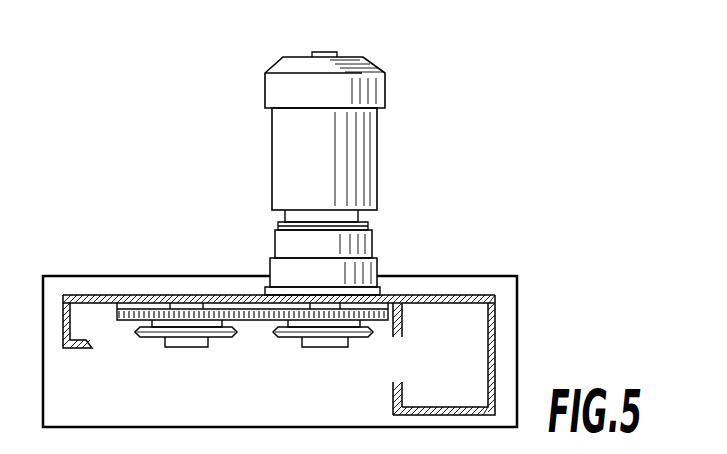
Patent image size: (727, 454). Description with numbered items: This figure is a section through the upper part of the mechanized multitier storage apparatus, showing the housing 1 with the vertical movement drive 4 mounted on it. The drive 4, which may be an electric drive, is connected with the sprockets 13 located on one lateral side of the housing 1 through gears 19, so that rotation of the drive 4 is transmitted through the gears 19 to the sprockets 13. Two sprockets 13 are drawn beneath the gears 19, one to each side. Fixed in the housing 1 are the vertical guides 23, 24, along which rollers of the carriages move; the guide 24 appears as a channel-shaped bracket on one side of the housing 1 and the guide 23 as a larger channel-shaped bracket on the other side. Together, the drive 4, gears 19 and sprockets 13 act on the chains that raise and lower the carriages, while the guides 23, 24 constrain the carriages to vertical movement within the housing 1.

The housing 1 is at (222, 297).
The vertical movement drive 4 is at (282, 143).
The sprockets 13 is at (232, 335).
The gears 19 is at (136, 309).
The vertical guide 23 is at (467, 407).
The vertical guide 24 is at (78, 297).